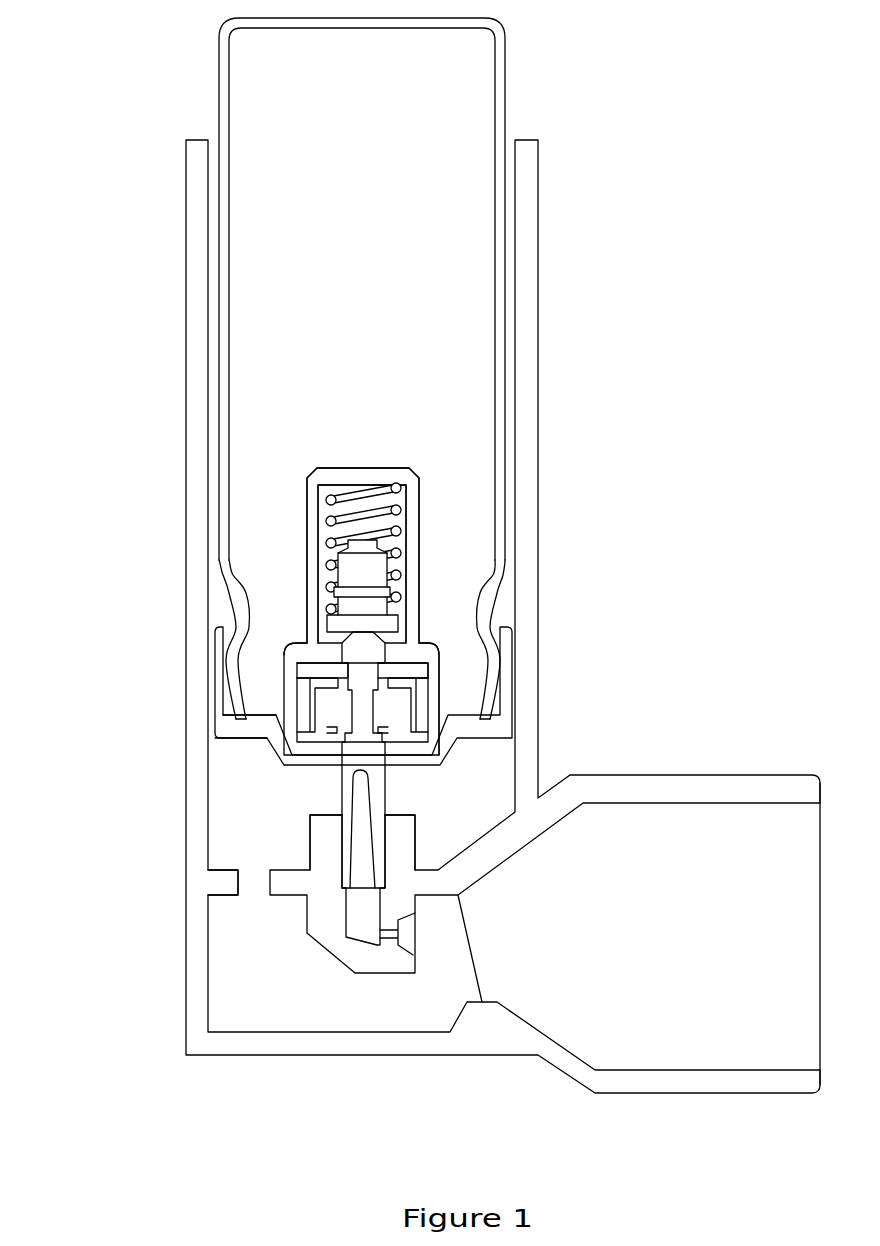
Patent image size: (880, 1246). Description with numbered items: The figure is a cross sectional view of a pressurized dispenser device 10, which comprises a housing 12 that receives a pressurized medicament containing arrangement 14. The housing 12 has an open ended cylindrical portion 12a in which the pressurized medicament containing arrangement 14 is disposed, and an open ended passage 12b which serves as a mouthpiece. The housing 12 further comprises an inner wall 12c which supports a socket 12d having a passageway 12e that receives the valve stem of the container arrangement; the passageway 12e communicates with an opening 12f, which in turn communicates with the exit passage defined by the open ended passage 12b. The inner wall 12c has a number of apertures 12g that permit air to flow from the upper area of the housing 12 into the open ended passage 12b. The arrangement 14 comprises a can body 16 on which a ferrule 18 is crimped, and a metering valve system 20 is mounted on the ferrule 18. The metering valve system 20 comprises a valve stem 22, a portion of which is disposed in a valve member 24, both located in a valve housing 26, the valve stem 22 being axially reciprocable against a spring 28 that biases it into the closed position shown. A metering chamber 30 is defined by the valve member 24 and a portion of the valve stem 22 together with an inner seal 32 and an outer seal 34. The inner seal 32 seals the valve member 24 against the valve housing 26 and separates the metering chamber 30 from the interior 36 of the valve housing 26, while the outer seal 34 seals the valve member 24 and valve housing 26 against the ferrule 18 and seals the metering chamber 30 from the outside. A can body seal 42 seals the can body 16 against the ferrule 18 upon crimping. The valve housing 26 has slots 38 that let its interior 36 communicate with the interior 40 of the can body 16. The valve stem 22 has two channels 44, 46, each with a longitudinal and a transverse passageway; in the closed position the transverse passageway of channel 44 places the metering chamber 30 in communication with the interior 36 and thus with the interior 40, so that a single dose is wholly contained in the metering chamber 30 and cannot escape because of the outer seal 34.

The pressurized dispenser device 10 is at (165, 450).
The housing 12 is at (400, 1067).
The open ended cylindrical portion 12a is at (197, 292).
The open ended passage 12b is at (652, 790).
The inner wall 12c is at (232, 875).
The socket 12d is at (322, 840).
The passageway 12e is at (360, 920).
The opening 12f is at (407, 943).
The apertures 12g is at (252, 888).
The pressurized medicament containing arrangement 14 is at (200, 86).
The can body 16 is at (506, 88).
The ferrule 18 is at (500, 623).
The metering valve system 20 is at (458, 683).
The valve stem 22 is at (347, 790).
The valve member 24 is at (303, 687).
The valve housing 26 is at (293, 643).
The spring 28 is at (337, 507).
The metering chamber 30 is at (318, 703).
The inner seal 32 is at (418, 670).
The outer seal 34 is at (413, 762).
The interior of the valve housing 36 is at (407, 522).
The slots 38 is at (413, 488).
The interior of the can body 40 is at (270, 380).
The can body seal 42 is at (227, 725).
The valve stem channel 44 is at (363, 660).
The valve stem channel 46 is at (362, 810).